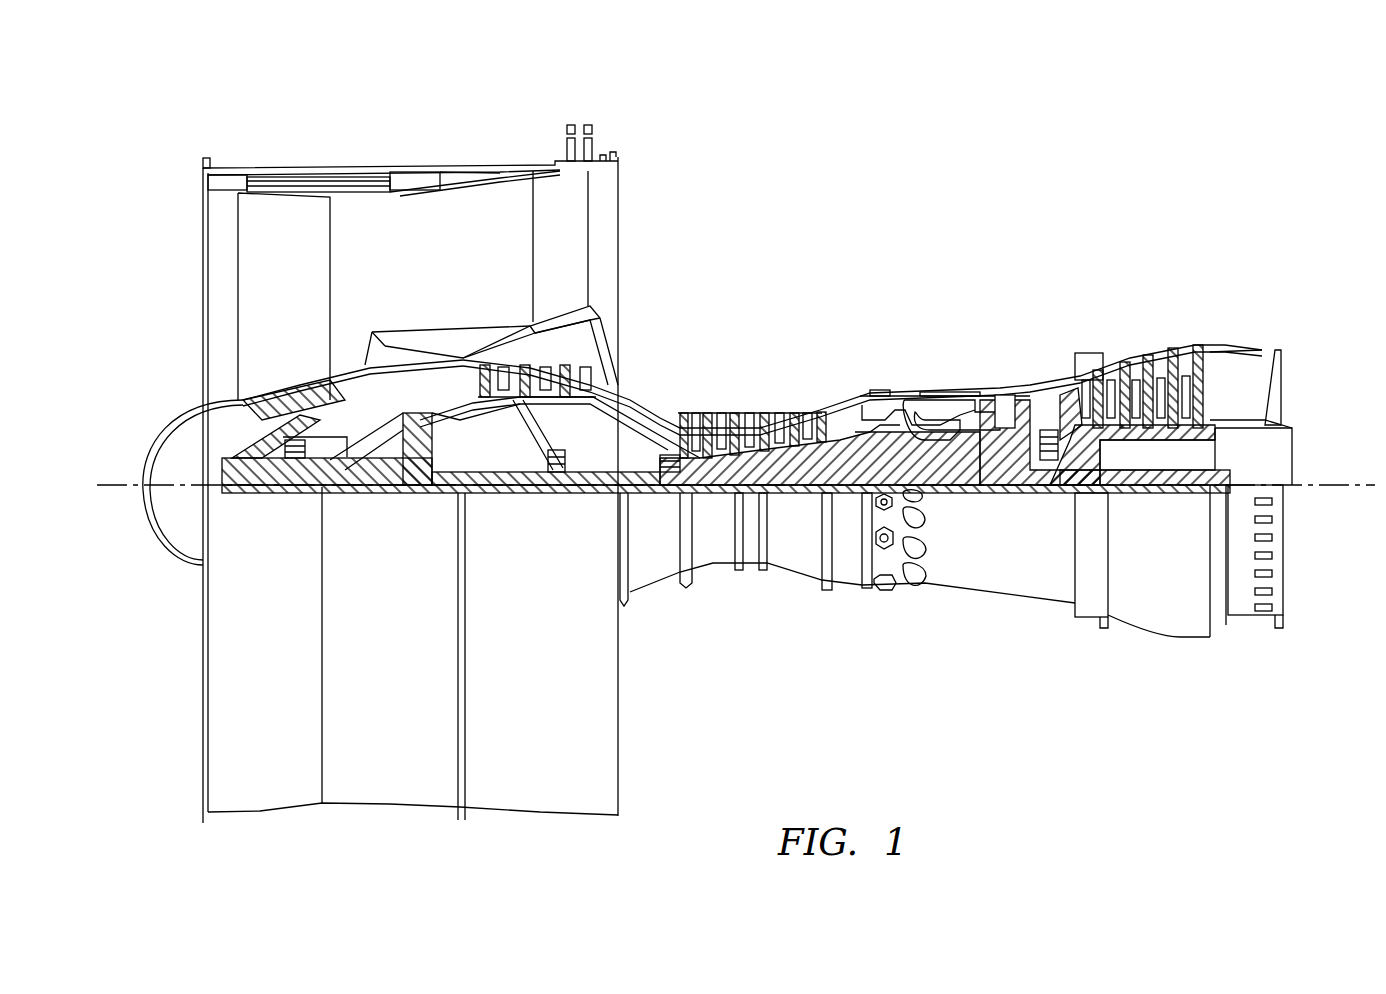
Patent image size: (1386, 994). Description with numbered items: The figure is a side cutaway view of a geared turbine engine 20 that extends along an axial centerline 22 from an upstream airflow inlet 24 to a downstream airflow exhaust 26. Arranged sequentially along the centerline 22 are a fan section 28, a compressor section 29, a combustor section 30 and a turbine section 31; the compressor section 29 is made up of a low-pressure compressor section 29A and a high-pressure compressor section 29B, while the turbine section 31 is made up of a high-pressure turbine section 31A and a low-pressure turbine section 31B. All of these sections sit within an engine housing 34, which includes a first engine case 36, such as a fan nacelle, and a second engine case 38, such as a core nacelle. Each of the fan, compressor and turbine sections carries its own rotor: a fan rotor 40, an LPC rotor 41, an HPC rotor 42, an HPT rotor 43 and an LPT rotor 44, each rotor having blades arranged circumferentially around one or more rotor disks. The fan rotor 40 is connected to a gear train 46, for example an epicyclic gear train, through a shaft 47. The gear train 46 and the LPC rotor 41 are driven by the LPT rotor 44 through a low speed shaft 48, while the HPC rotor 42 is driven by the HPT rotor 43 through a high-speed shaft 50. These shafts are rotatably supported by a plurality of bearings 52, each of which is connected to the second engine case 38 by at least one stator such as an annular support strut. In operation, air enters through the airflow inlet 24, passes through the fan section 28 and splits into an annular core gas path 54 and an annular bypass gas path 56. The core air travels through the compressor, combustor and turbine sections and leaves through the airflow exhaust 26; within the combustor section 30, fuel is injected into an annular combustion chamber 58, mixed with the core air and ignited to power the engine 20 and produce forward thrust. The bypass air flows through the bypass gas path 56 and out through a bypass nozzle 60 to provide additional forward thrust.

The geared turbine engine 20 is at (158, 131).
The axial centerline 22 is at (1358, 484).
The upstream airflow inlet 24 is at (203, 207).
The downstream airflow exhaust 26 is at (1282, 382).
The fan section 28 is at (208, 141).
The compressor section 29 is at (452, 67).
The low-pressure compressor section 29A is at (622, 124).
The high-pressure compressor section 29B is at (648, 303).
The combustor section 30 is at (942, 346).
The turbine section 31 is at (976, 234).
The high-pressure turbine section 31A is at (1055, 303).
The low-pressure turbine section 31B is at (1240, 303).
The engine housing 34 is at (648, 634).
The first engine case 36 is at (550, 820).
The second engine case 38 is at (845, 588).
The fan rotor 40 is at (240, 400).
The LPC rotor 41 is at (525, 493).
The HPC rotor 42 is at (790, 493).
The HPT rotor 43 is at (1005, 493).
The LPT rotor 44 is at (1150, 430).
The gear train 46 is at (412, 493).
The shaft 47 is at (246, 493).
The low speed shaft 48 is at (1162, 493).
The high-speed shaft 50 is at (935, 493).
The bearings 52 is at (312, 493).
The annular core gas path 54 is at (646, 402).
The annular bypass gas path 56 is at (440, 266).
The annular combustion chamber 58 is at (928, 415).
The bypass nozzle 60 is at (618, 205).